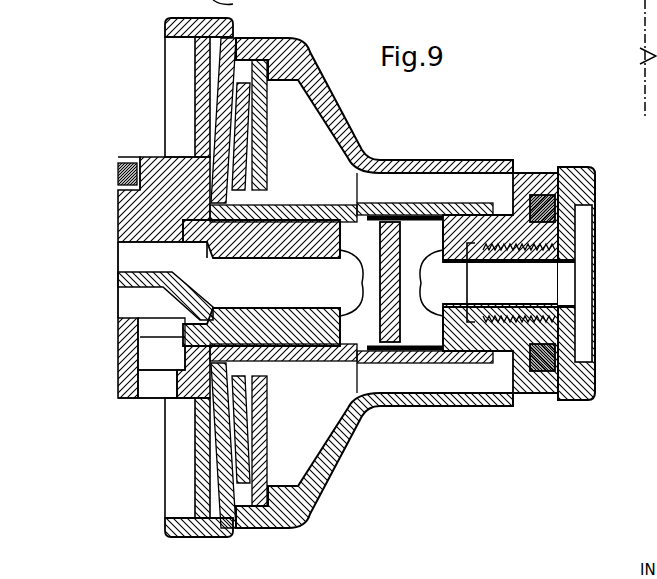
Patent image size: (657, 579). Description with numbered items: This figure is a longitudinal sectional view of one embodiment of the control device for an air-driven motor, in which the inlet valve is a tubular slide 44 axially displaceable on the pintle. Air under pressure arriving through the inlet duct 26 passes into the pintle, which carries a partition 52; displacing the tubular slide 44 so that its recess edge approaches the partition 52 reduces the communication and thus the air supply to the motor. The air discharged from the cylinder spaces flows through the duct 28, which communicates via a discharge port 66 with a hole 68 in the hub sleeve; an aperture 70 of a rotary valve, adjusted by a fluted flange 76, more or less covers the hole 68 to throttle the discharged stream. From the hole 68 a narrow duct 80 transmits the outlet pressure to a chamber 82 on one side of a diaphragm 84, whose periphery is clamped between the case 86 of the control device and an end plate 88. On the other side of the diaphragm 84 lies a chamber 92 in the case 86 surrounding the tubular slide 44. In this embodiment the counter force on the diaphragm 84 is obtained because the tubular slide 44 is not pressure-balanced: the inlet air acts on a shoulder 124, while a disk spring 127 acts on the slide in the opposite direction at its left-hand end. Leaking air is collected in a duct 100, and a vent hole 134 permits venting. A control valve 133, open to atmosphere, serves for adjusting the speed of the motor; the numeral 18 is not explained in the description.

The shaft bore sleeve 18 is at (288, 312).
The inlet duct 26 is at (164, 211).
The duct 28 is at (122, 303).
The tubular slide 44 is at (297, 350).
The partition 52 is at (378, 312).
The discharge port 66 is at (160, 300).
The hole 68 is at (117, 357).
The aperture 70 is at (147, 392).
The fluted flange 76 is at (207, 538).
The narrow duct 80 is at (186, 352).
The chamber 82 is at (225, 147).
The diaphragm 84 is at (262, 115).
The case 86 is at (320, 464).
The end plate 88 is at (255, 520).
The chamber 92 is at (374, 105).
The duct 100 is at (277, 203).
The shoulder 124 is at (371, 174).
The disk spring 127 is at (213, 94).
The control valve 133 is at (639, 55).
The vent hole 134 is at (219, 1).